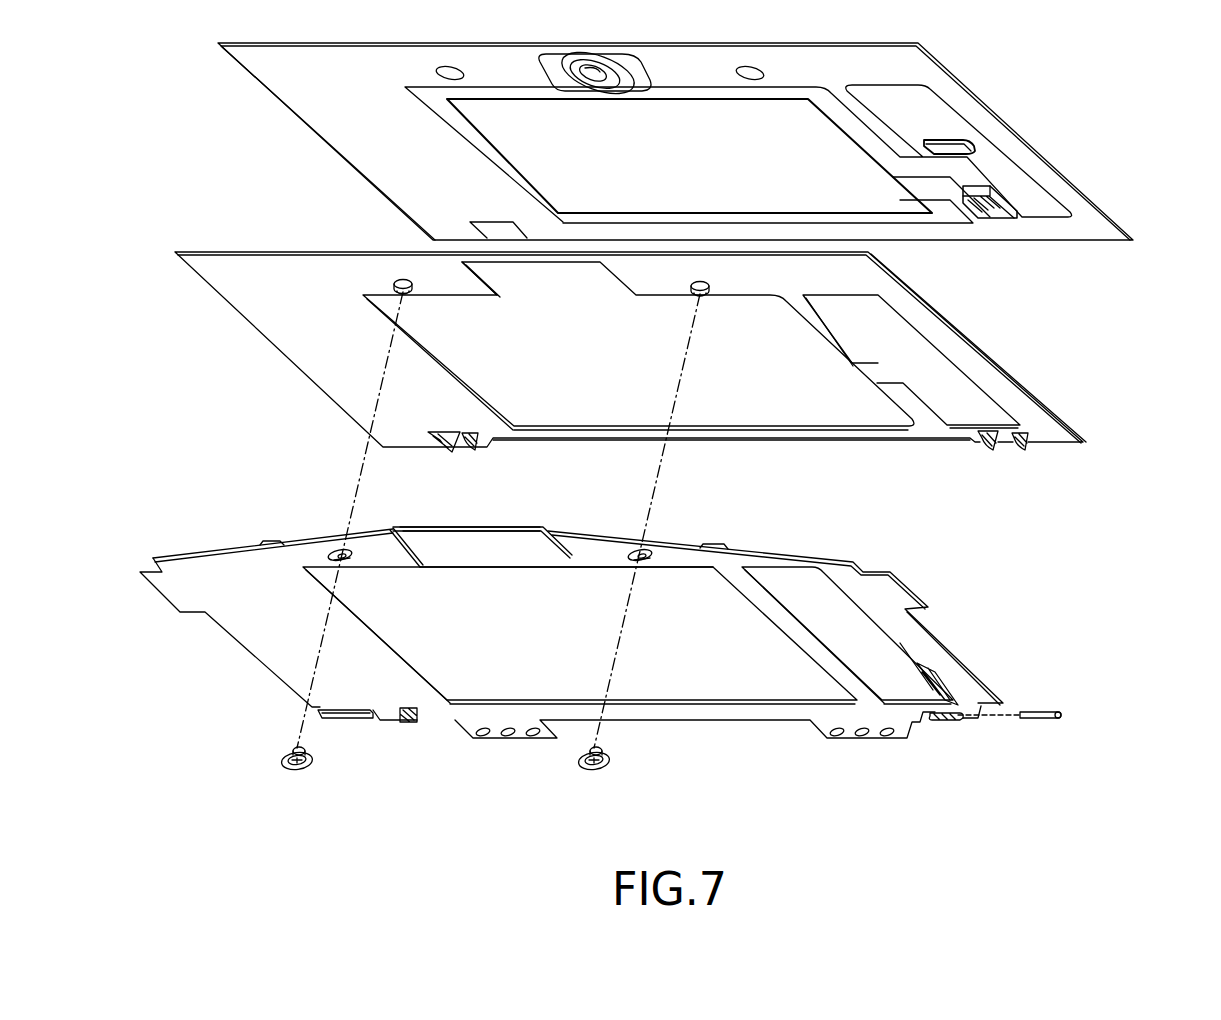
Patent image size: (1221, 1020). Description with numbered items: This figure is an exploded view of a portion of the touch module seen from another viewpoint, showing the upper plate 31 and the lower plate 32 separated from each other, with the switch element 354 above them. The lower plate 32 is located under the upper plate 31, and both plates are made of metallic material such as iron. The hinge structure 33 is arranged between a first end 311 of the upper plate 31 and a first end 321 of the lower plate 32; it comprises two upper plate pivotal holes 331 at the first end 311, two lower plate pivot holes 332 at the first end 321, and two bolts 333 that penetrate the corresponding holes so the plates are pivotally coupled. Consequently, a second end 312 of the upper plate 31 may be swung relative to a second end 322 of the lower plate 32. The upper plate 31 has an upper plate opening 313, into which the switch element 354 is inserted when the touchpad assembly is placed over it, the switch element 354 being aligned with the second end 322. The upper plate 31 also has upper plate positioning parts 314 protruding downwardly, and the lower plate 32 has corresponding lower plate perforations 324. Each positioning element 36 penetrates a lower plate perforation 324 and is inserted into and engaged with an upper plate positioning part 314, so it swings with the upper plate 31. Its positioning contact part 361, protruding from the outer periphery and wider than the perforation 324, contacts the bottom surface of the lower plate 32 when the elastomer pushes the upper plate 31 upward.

The upper plate 31 is at (917, 320).
The first end of the upper plate 311 is at (718, 436).
The second end of the upper plate 312 is at (650, 277).
The upper plate opening 313 is at (548, 273).
The upper plate positioning part 314 is at (413, 287).
The lower plate 32 is at (890, 602).
The first end of the lower plate 321 is at (667, 712).
The second end of the lower plate 322 is at (490, 557).
The lower plate perforation 324 is at (353, 561).
The hinge structure 33 is at (758, 605).
The upper plate pivotal hole 331 is at (444, 452).
The lower plate pivot hole 332 is at (415, 717).
The bolt 333 is at (353, 717).
The switch element 354 is at (577, 83).
The positioning element 36 is at (448, 785).
The positioning contact part 361 is at (284, 758).